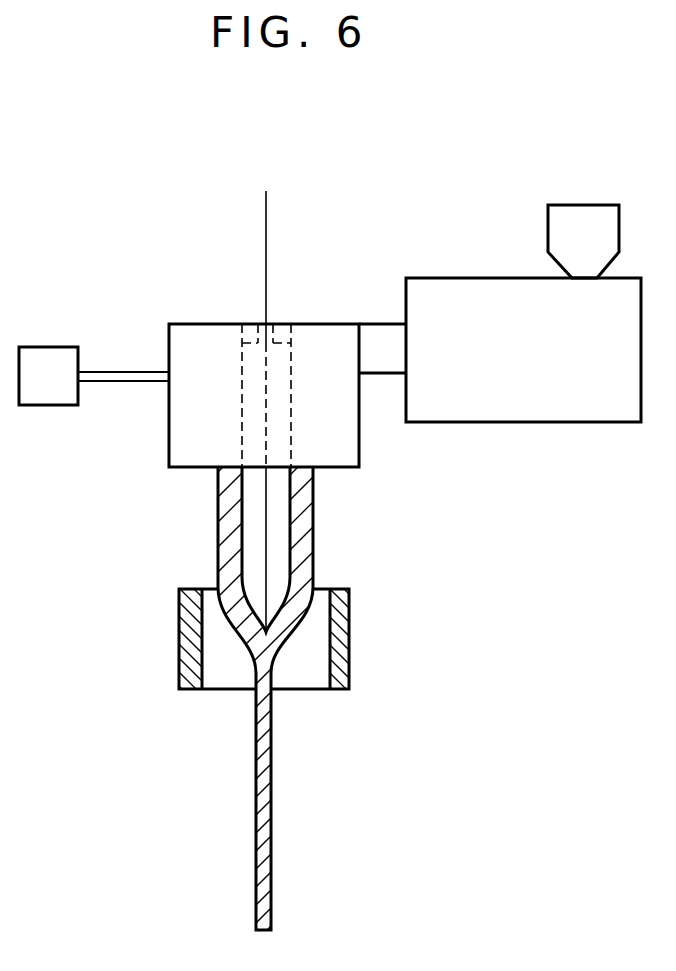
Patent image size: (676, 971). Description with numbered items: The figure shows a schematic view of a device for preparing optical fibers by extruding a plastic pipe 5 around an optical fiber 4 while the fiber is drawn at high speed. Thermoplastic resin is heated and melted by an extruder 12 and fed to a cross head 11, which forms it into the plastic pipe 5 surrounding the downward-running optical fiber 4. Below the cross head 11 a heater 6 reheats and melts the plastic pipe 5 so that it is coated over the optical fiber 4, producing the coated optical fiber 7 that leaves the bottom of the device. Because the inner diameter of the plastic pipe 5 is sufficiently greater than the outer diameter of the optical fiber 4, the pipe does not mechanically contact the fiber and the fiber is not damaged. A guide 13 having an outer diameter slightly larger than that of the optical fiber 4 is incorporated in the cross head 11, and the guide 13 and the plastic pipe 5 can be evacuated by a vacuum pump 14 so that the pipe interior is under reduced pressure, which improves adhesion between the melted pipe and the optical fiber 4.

The optical fiber 4 is at (286, 411).
The plastic pipe 5 is at (262, 578).
The heater 6 is at (289, 641).
The coated optical fiber 7 is at (261, 810).
The cross head 11 is at (265, 374).
The extruder 12 is at (500, 313).
The guide 13 is at (238, 374).
The vacuum pump 14 is at (94, 353).